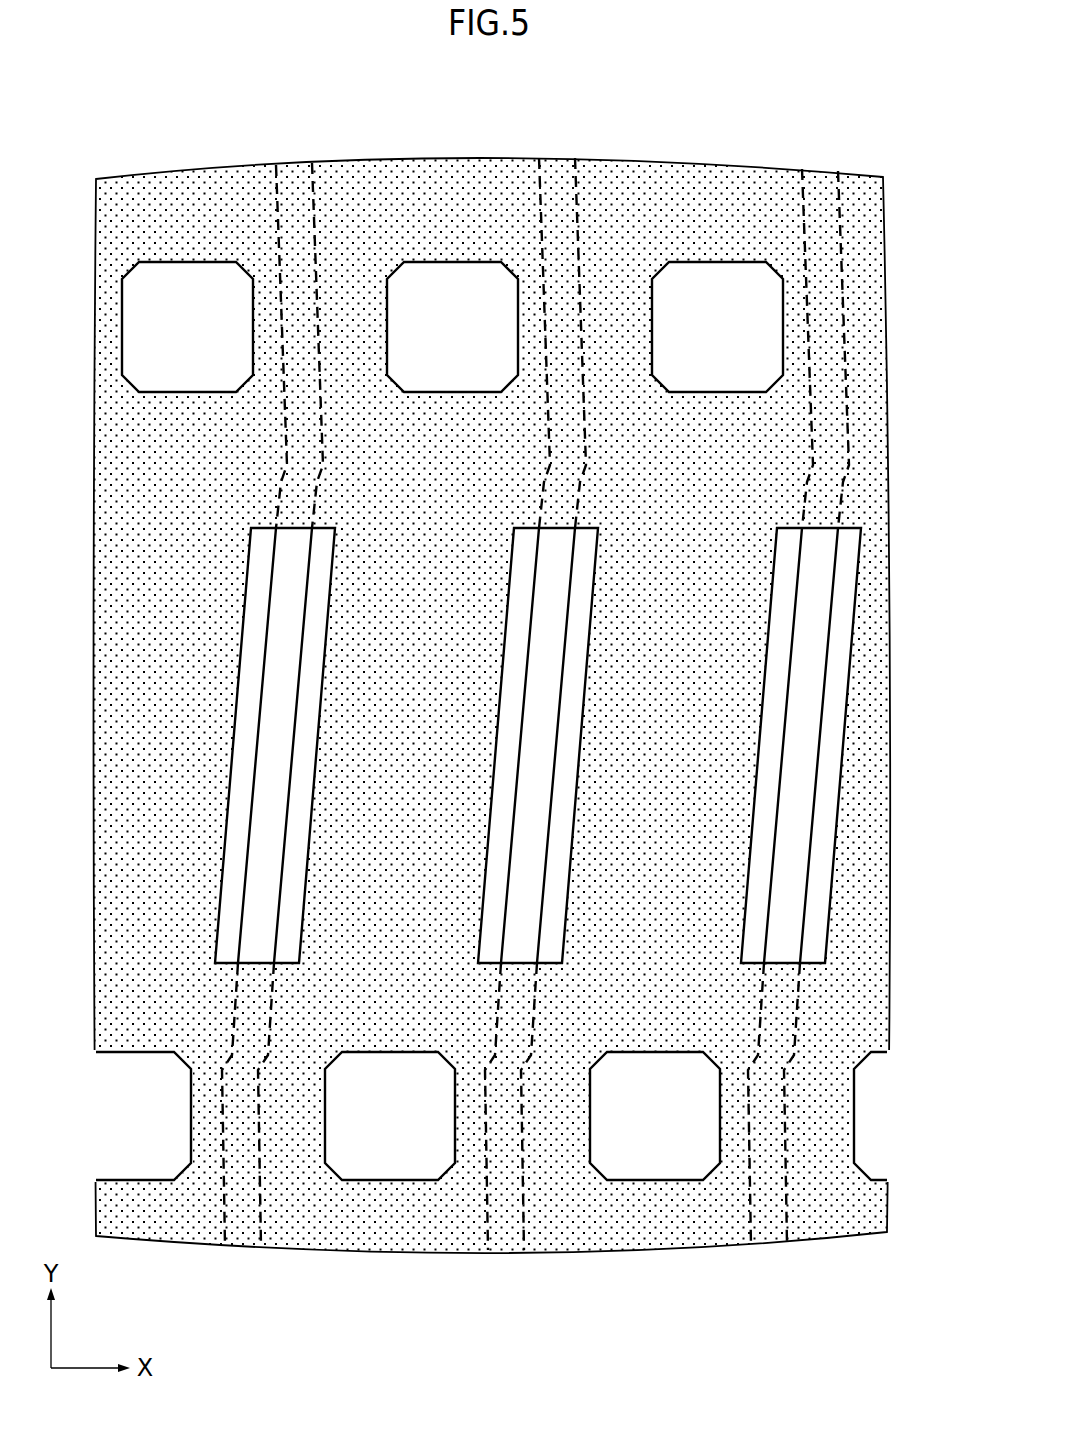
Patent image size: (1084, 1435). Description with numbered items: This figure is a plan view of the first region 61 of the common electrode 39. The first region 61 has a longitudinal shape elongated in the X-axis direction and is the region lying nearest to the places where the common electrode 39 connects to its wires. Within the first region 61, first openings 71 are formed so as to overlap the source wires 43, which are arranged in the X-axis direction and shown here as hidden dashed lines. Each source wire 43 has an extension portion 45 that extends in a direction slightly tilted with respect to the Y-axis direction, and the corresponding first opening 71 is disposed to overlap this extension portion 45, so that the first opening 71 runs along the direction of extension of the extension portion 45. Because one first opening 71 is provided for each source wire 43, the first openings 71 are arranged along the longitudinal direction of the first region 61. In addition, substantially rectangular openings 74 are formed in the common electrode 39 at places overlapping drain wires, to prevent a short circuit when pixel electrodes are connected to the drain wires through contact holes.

The common electrode 39 is at (191, 208).
The source wire 43 is at (286, 438).
The extension portion 45 is at (273, 758).
The first region 61 is at (501, 695).
The first opening 71 is at (244, 657).
The opening 74 is at (457, 1110).